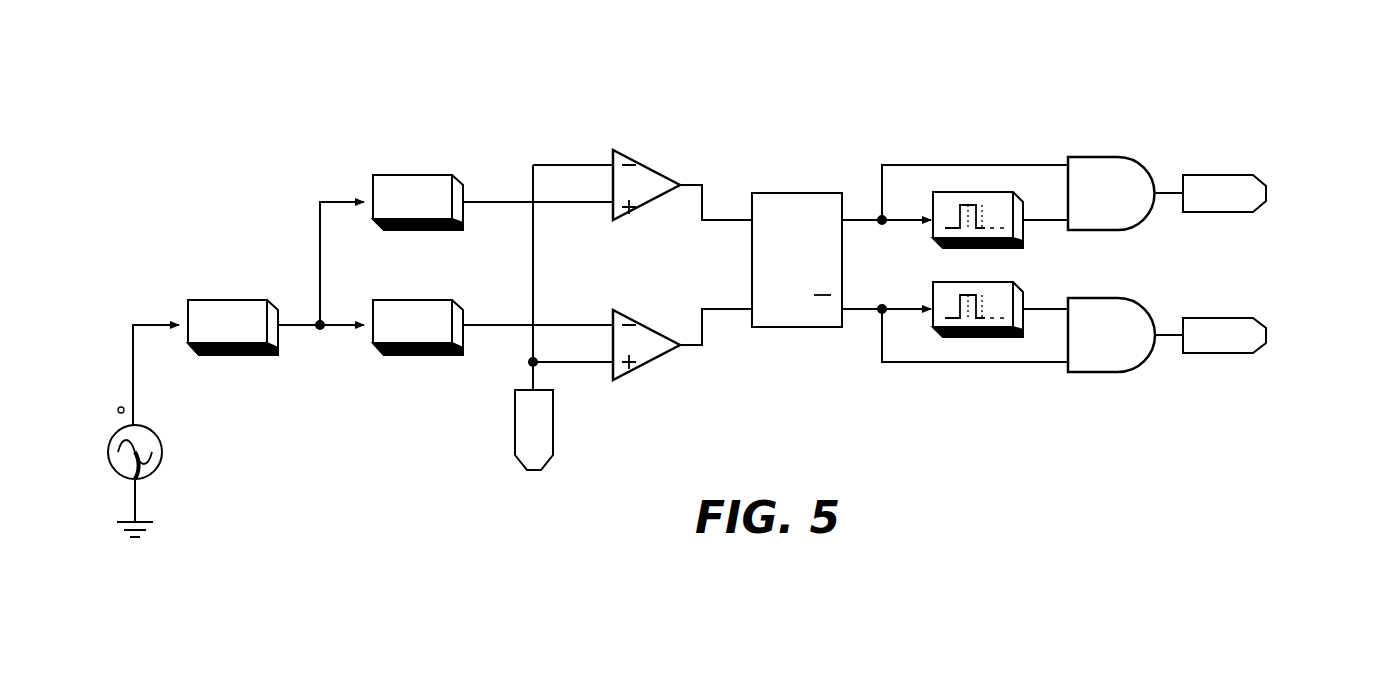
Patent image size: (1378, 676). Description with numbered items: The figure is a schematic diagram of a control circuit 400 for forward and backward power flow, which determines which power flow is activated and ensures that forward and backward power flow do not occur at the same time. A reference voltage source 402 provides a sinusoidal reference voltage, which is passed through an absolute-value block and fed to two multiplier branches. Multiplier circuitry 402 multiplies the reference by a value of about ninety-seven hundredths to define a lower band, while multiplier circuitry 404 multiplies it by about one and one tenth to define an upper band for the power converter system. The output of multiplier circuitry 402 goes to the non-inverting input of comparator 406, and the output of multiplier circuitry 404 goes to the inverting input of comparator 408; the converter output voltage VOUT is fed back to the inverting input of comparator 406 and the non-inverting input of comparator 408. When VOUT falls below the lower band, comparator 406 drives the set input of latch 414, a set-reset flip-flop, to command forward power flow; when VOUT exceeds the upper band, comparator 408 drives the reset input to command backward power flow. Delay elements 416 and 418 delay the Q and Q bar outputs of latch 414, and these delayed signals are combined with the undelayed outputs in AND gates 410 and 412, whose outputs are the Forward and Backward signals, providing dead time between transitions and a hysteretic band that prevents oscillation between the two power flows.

The control circuit 400 is at (1278, 74).
The reference voltage source / multiplier circuitry 402 is at (141, 425).
The multiplier circuitry 404 is at (450, 300).
The comparator 406 is at (642, 160).
The comparator 408 is at (628, 313).
The AND gate 410 is at (1090, 157).
The AND gate 412 is at (1088, 298).
The latch 414 is at (778, 192).
The delay element 416 is at (955, 192).
The delay element 418 is at (950, 338).